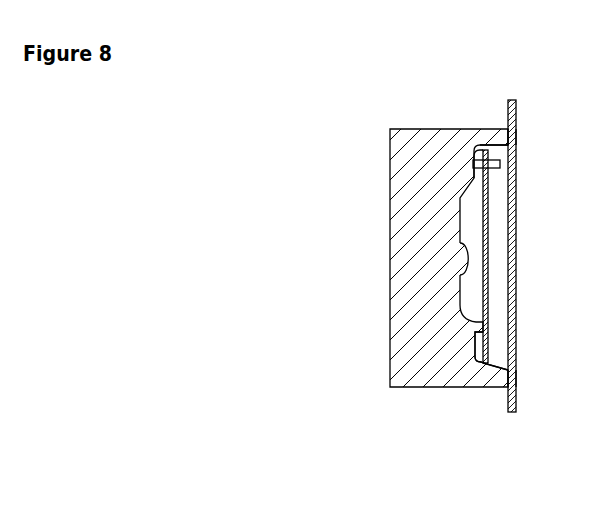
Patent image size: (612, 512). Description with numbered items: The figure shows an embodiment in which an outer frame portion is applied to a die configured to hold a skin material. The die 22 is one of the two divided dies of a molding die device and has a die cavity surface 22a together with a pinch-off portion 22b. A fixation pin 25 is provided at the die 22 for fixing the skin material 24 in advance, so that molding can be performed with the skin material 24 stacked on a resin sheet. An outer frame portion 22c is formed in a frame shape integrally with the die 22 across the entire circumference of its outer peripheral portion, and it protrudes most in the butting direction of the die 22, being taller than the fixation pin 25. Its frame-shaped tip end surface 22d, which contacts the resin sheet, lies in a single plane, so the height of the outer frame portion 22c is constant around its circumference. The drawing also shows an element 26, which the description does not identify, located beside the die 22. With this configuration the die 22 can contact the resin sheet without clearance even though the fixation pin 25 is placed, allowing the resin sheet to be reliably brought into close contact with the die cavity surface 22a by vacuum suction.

The die 22 is at (410, 227).
The die cavity surface 22a is at (468, 273).
The pinch-off portion 22b is at (476, 184).
The outer frame portion 22c is at (490, 138).
The tip end surface 22d is at (517, 138).
The skin material 24 is at (488, 222).
The fixation pin 25 is at (498, 164).
The cover plate 26 is at (508, 110).